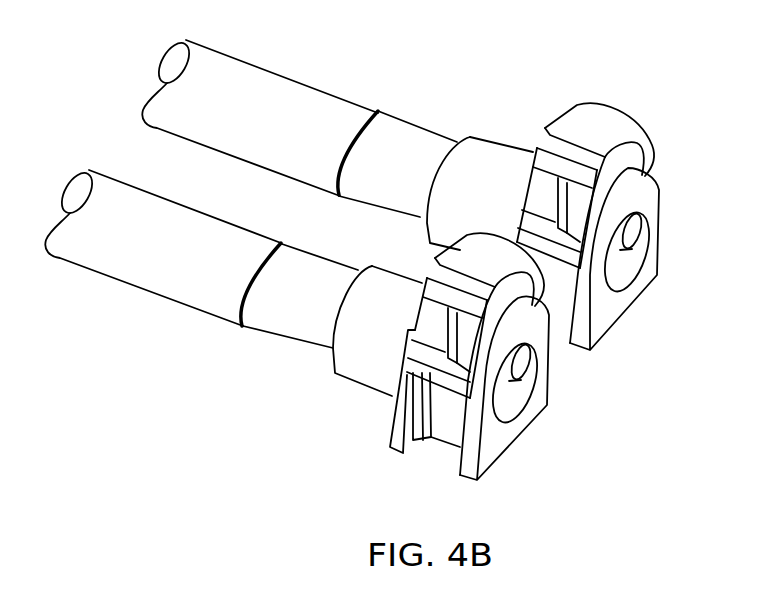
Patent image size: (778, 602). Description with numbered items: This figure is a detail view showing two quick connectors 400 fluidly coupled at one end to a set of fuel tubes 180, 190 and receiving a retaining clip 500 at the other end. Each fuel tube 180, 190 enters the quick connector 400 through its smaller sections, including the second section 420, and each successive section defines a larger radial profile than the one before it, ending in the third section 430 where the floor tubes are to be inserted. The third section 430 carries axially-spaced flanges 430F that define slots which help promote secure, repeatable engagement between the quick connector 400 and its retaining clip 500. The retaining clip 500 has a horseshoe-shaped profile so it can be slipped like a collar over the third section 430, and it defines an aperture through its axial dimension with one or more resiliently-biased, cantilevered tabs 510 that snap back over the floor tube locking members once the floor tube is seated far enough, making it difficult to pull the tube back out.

The fuel tube 180 is at (121, 153).
The fuel tube 190 is at (268, 70).
The quick connector 400 is at (663, 96).
The second section 420 is at (273, 327).
The third section 430 is at (340, 381).
The flanges 430F is at (408, 446).
The retaining clip 500 is at (655, 155).
The resiliently-biased tab 510 is at (573, 222).